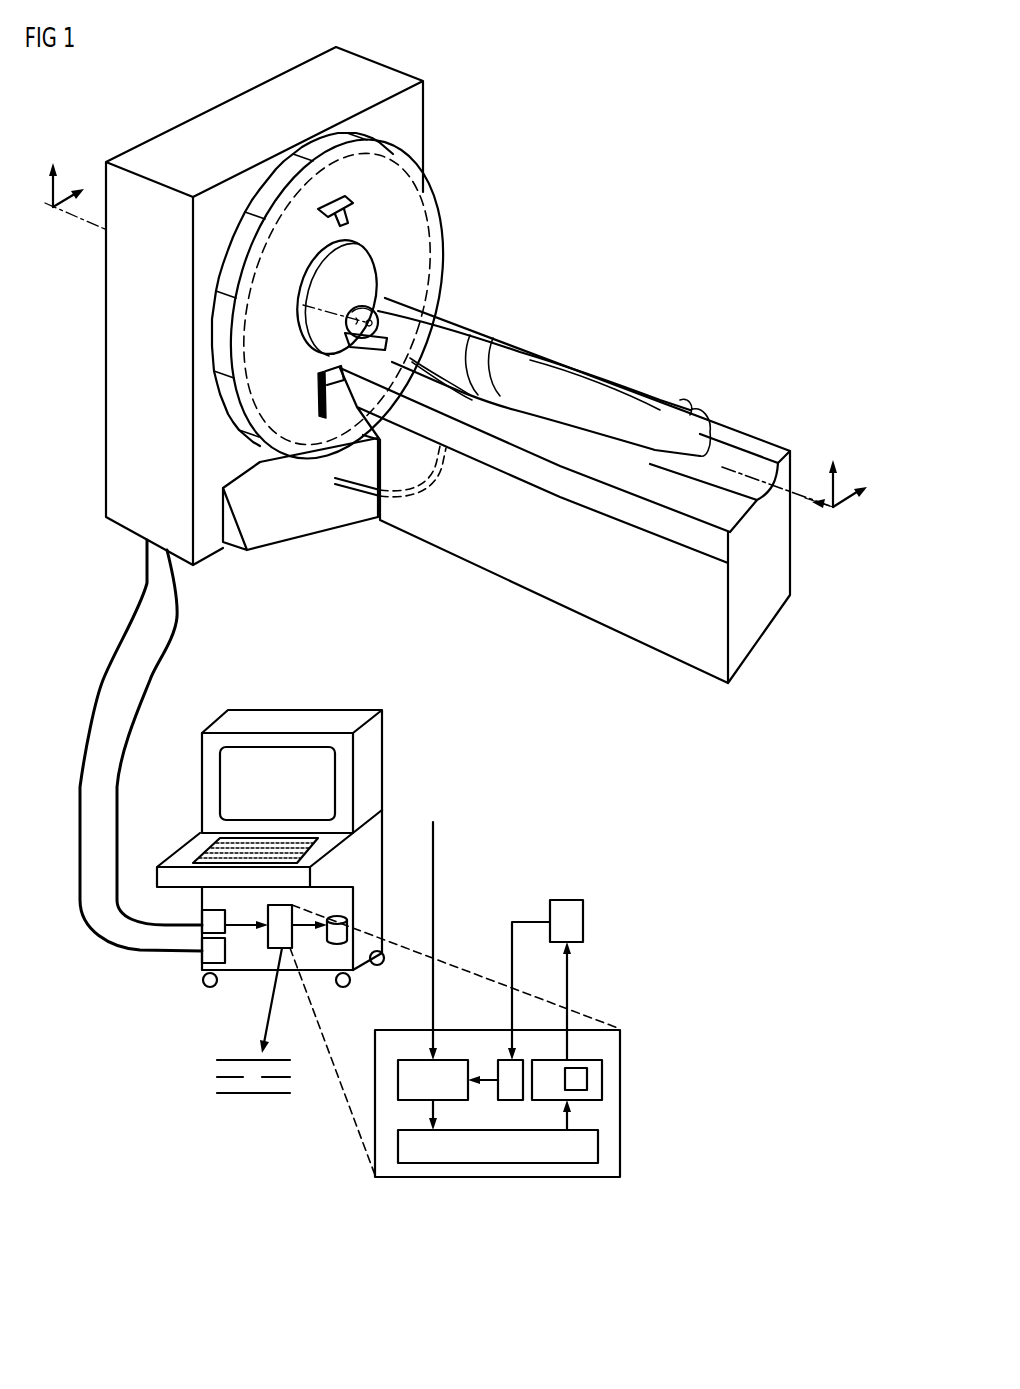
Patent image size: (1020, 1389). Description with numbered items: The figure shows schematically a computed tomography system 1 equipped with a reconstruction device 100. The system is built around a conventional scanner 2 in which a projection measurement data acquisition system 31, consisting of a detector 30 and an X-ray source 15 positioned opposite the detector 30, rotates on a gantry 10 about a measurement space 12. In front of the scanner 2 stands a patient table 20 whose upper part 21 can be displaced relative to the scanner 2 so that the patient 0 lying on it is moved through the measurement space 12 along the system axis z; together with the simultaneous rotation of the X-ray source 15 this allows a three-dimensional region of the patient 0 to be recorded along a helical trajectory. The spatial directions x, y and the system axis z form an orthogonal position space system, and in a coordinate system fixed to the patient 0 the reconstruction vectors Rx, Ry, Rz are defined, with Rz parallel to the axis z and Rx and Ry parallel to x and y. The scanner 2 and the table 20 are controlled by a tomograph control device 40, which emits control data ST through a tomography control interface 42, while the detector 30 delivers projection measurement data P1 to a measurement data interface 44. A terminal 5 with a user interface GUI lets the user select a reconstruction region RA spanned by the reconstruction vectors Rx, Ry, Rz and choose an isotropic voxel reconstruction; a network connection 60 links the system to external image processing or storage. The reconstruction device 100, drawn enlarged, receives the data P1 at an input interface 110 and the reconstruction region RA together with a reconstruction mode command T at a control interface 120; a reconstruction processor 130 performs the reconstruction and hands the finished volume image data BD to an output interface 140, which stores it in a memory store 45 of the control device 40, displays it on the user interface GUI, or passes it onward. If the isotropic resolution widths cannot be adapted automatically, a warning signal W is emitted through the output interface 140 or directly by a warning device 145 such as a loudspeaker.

The computed tomography system 1 is at (628, 200).
The scanner 2 is at (125, 530).
The gantry 10 is at (432, 220).
The measurement space 12 is at (322, 278).
The X-ray source 15 is at (350, 200).
The patient table 20 is at (540, 576).
The upper part 21 is at (708, 443).
The detector 30 is at (330, 420).
The projection measurement data acquisition system 31 is at (326, 189).
The tomograph control device 40 is at (325, 682).
The tomography control interface 42 is at (202, 956).
The measurement data interface 44 is at (202, 916).
The memory store 45 is at (347, 922).
The terminal 5 is at (177, 850).
The network 60 is at (253, 1097).
The reconstruction device 100 is at (268, 948).
The input interface 110 is at (433, 1028).
The control interface 120 is at (517, 1040).
The reconstruction processor 130 is at (532, 1163).
The output interface 140 is at (603, 1067).
The warning device 145 is at (587, 1080).
The patient 0 is at (541, 368).
The spatial direction x is at (78, 189).
The spatial direction y is at (53, 166).
The system axis z is at (62, 212).
The reconstruction vector Rx is at (852, 509).
The reconstruction vector Ry is at (827, 466).
The reconstruction vector Rz is at (816, 509).
The control data ST is at (100, 683).
The projection measurement data P1 is at (155, 683).
The user interface GUI is at (337, 777).
The volume image data BD is at (300, 937).
The reconstruction mode command T is at (512, 927).
The reconstruction region RA is at (527, 920).
The warning signal W is at (567, 967).